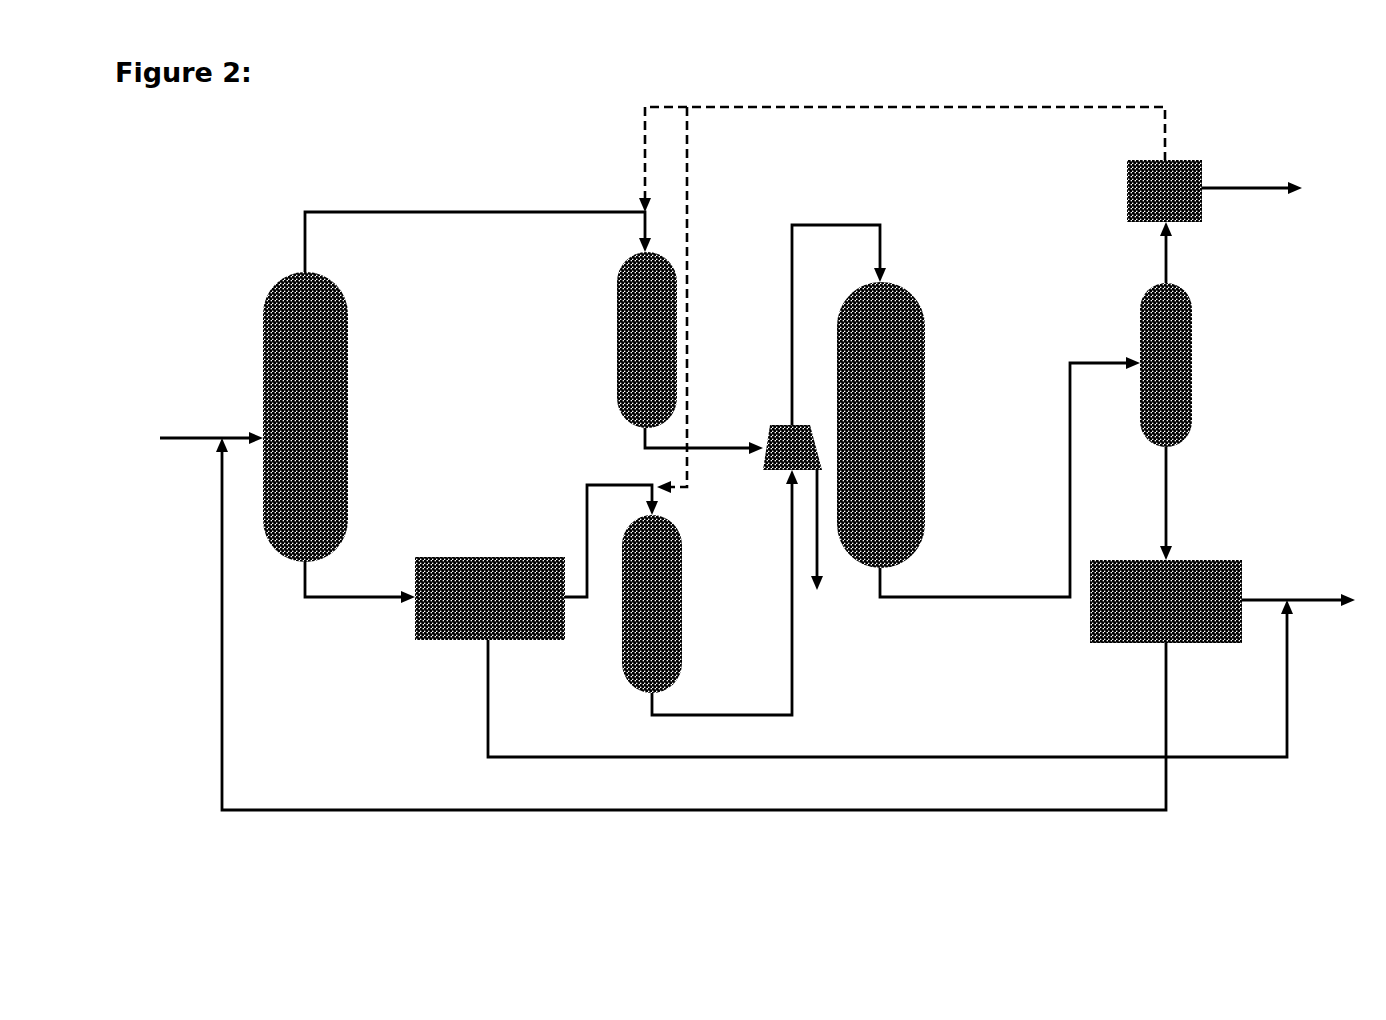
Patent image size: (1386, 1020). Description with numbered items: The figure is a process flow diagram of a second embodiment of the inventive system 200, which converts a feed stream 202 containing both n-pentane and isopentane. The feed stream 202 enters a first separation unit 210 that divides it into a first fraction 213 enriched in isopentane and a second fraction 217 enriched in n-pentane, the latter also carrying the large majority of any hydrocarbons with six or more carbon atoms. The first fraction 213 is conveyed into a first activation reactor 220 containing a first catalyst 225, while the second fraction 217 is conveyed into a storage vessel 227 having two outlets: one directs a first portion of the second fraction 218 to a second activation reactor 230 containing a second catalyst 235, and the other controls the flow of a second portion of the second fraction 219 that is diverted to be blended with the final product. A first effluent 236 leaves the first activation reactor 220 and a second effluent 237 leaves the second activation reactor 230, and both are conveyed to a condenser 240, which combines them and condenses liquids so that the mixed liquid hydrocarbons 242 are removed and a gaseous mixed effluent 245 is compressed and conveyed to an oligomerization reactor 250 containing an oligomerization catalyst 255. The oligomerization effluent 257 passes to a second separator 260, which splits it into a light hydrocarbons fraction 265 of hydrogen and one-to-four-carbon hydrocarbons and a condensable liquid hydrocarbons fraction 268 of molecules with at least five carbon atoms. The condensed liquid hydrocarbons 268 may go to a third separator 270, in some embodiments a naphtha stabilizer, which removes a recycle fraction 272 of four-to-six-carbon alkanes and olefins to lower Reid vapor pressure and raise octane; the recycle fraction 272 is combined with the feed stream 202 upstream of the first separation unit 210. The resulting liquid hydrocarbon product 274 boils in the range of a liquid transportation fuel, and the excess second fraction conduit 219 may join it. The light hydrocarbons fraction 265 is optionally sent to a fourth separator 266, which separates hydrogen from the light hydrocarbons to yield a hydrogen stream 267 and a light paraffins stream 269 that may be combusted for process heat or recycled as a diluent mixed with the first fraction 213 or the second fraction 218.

The system 200 is at (191, 205).
The feed stream 202 is at (185, 438).
The first separation unit 210 is at (262, 362).
The first fraction 213 is at (445, 210).
The second fraction 217 is at (375, 600).
The first portion of the second fraction 218 is at (585, 530).
The second portion of the second fraction 219 is at (487, 665).
The first activation reactor 220 is at (615, 373).
The first catalyst 225 is at (647, 340).
The storage vessel 227 is at (490, 598).
The second activation reactor 230 is at (620, 645).
The second catalyst 235 is at (652, 604).
The first effluent 236 is at (720, 452).
The second effluent 237 is at (795, 660).
The condenser 240 is at (775, 422).
The mixed liquid hydrocarbons 242 is at (831, 548).
The mixed effluent 245 is at (845, 225).
The oligomerization reactor 250 is at (925, 315).
The oligomerization catalyst 255 is at (881, 425).
The oligomerization effluent 257 is at (908, 600).
The second separator 260 is at (1195, 330).
The light hydrocarbons fraction 265 is at (1160, 247).
The fourth separator 266 is at (1122, 212).
The hydrogen stream 267 is at (1284, 187).
The condensable liquid hydrocarbons fraction 268 is at (1172, 527).
The C1-C4 light paraffins stream 269 is at (865, 110).
The third separator 270 is at (1140, 645).
The recycle fraction 272 is at (1170, 675).
The liquid hydrocarbon product 274 is at (1258, 598).